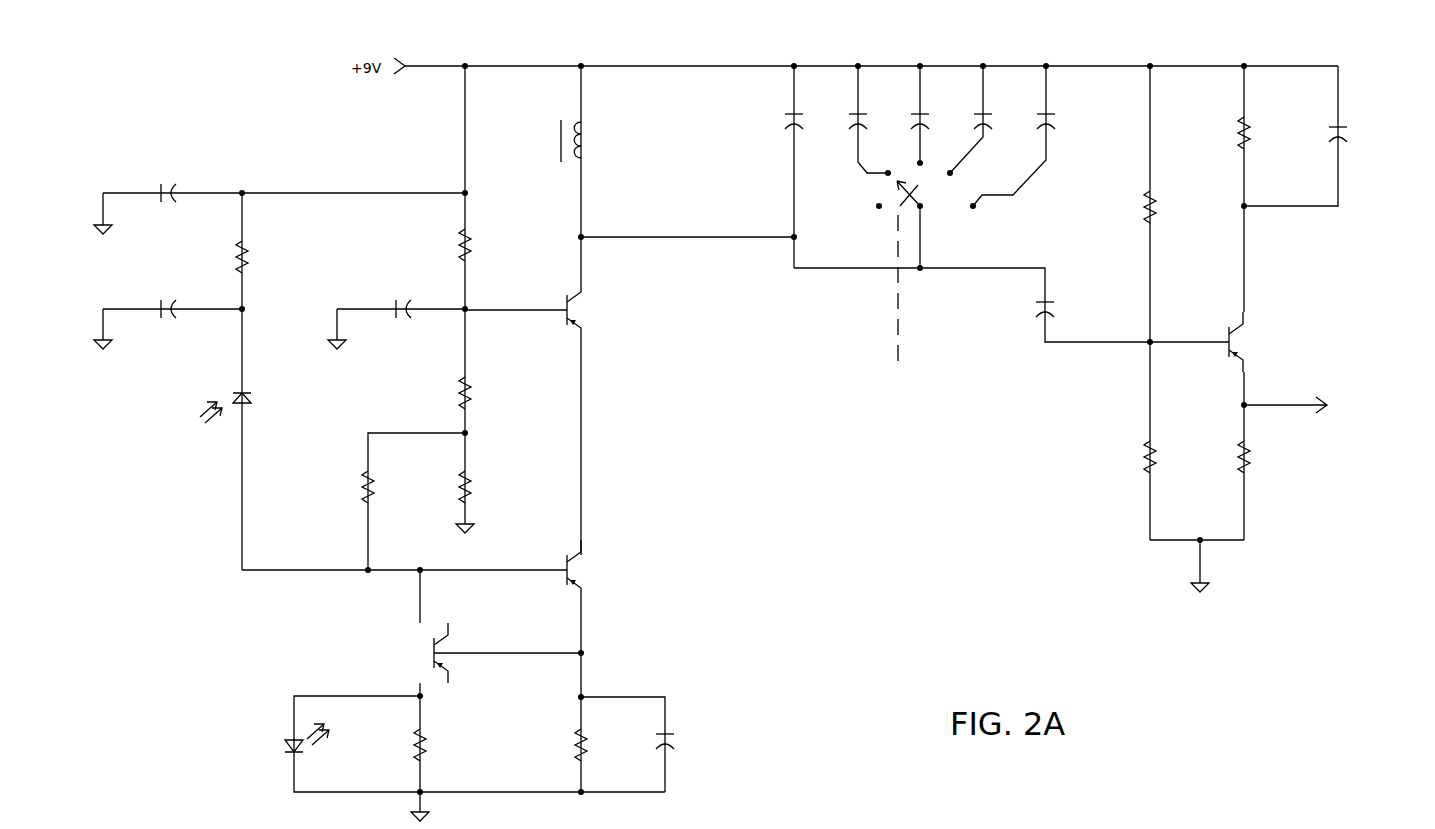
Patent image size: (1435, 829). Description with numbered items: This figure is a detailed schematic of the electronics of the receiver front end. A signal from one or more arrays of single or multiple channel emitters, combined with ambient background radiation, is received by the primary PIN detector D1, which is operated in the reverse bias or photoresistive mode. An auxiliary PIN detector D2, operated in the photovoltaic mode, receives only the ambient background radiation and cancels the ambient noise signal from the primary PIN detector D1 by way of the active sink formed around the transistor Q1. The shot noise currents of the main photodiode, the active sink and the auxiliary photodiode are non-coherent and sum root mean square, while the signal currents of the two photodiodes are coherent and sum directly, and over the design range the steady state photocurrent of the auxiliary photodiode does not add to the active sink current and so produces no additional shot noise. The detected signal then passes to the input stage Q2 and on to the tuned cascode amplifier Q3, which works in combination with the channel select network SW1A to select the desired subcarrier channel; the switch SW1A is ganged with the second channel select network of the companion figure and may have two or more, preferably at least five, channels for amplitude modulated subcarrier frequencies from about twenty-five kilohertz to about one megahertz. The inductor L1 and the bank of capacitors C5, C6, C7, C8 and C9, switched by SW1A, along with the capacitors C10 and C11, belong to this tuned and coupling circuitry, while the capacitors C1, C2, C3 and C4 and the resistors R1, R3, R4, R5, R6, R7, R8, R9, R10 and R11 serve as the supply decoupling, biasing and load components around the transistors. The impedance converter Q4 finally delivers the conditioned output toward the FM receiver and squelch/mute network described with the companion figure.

The capacitor 1uF/16V C1 is at (658, 743).
The capacitor 10uF/10V C2 is at (169, 316).
The capacitor 1uF/16V C3 is at (398, 316).
The capacitor 10uF/10V C4 is at (281, 201).
The channel capacitor C5 is at (807, 167).
The channel capacitor C6 is at (871, 119).
The channel capacitor C7 is at (933, 114).
The channel capacitor C8 is at (984, 119).
The channel capacitor C9 is at (1027, 136).
The capacitor 0.022 C10 is at (1132, 317).
The capacitor 0.022 C11 is at (1319, 136).
The resistor R1 is at (521, 759).
The resistor 10M R3 is at (413, 503).
The resistor 5.1K R4 is at (487, 502).
The resistor 10K R5 is at (487, 406).
The resistor 10K R6 is at (487, 245).
The resistor 1K R7 is at (258, 251).
The resistor 120K R8 is at (1175, 456).
The resistor 27K R9 is at (1171, 303).
The resistor 5.1K R10 is at (1267, 189).
The resistor 1.8K R11 is at (1267, 456).
The inductor 20mH L1 is at (600, 151).
The primary PIN detector D1 is at (256, 439).
The auxiliary PIN detector D2 is at (441, 744).
The active sink Q1 is at (462, 681).
The input stage Q2 is at (447, 666).
The tuned cascode amplifier Q3 is at (558, 396).
The impedance converter Q4 is at (1320, 426).
The channel select network SW1A is at (926, 280).